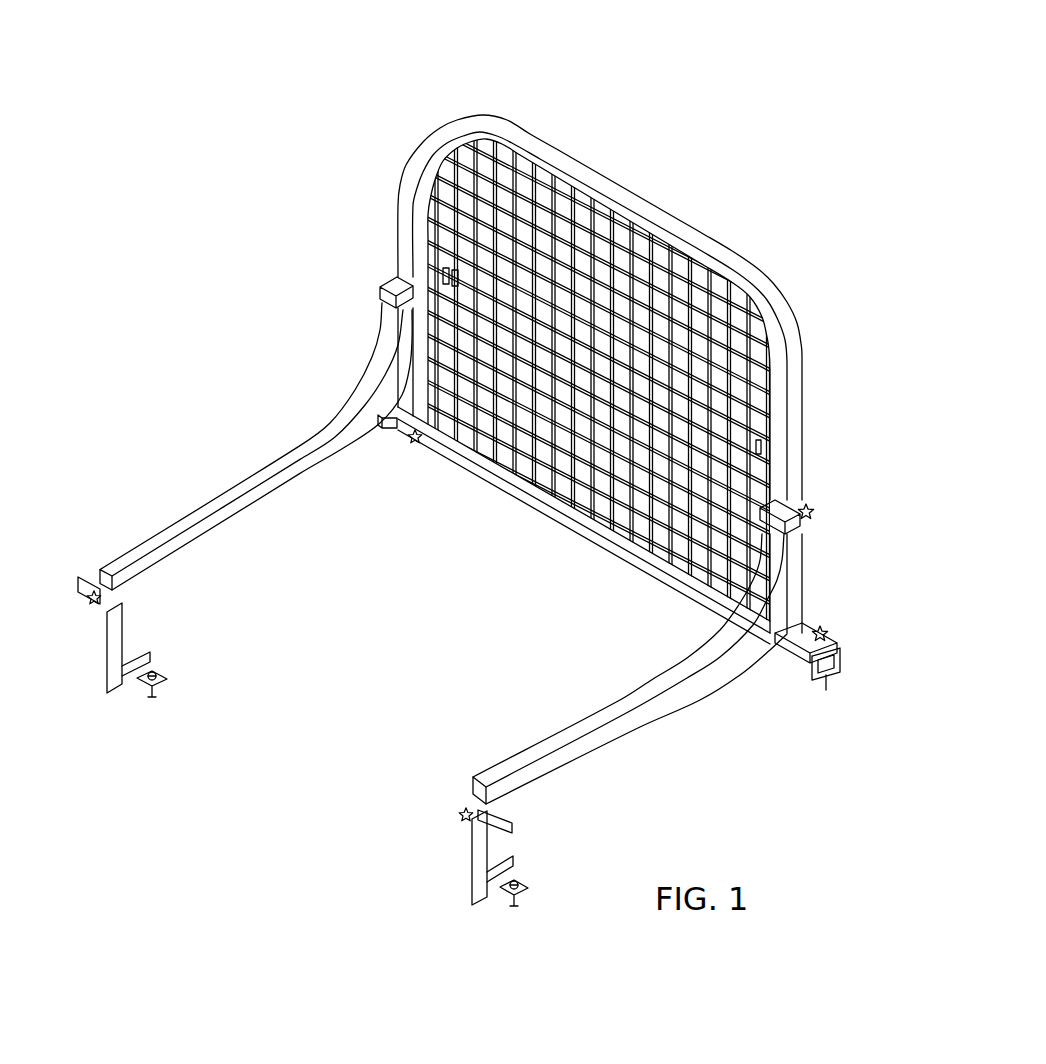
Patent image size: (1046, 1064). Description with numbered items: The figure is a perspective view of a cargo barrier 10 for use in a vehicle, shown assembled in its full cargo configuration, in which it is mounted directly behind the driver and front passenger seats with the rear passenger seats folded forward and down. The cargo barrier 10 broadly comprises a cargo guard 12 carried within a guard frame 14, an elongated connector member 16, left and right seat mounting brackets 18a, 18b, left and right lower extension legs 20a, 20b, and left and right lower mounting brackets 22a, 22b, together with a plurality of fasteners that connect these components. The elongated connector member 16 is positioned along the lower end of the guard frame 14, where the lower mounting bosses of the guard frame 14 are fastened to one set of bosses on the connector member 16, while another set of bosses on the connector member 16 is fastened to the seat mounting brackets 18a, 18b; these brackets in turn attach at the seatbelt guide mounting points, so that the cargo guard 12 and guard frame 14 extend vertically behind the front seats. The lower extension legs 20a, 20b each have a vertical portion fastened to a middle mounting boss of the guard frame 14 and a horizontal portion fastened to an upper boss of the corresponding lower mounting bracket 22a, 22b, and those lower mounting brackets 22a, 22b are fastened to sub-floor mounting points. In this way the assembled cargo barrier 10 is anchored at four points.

The cargo barrier 10 is at (557, 319).
The cargo guard 12 is at (478, 222).
The guard frame 14 is at (397, 192).
The elongated connector member 16 is at (562, 527).
The left seat mounting bracket 18a is at (387, 428).
The right seat mounting bracket 18b is at (842, 652).
The left lower extension leg 20a is at (313, 408).
The right lower extension leg 20b is at (680, 645).
The left lower mounting bracket 22a is at (122, 637).
The right lower mounting bracket 22b is at (487, 857).